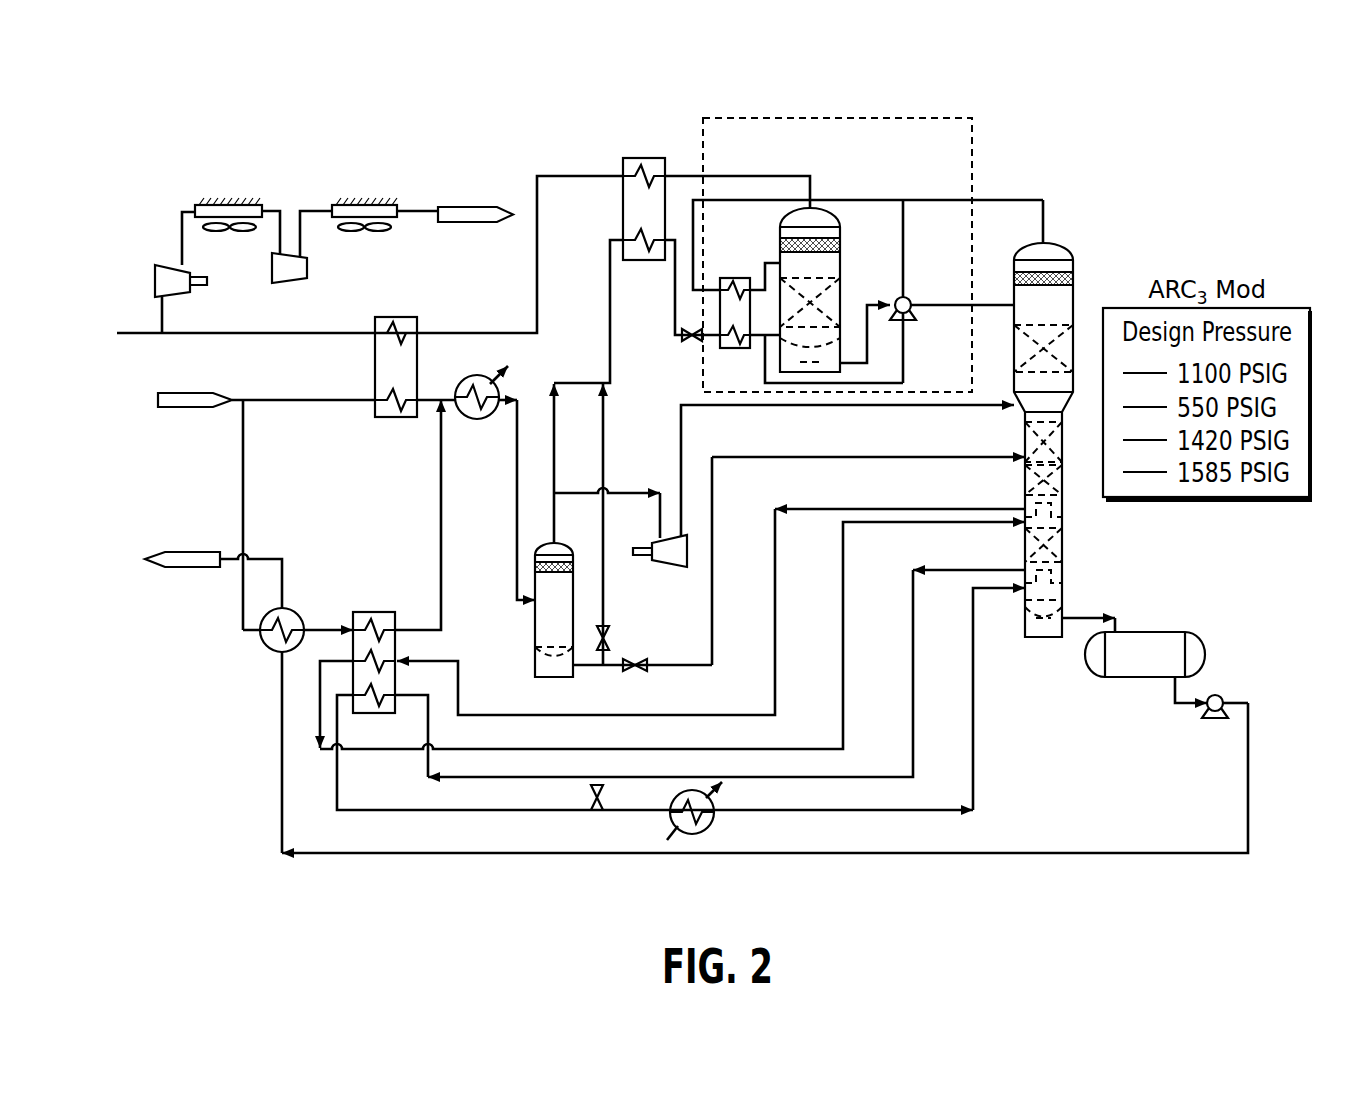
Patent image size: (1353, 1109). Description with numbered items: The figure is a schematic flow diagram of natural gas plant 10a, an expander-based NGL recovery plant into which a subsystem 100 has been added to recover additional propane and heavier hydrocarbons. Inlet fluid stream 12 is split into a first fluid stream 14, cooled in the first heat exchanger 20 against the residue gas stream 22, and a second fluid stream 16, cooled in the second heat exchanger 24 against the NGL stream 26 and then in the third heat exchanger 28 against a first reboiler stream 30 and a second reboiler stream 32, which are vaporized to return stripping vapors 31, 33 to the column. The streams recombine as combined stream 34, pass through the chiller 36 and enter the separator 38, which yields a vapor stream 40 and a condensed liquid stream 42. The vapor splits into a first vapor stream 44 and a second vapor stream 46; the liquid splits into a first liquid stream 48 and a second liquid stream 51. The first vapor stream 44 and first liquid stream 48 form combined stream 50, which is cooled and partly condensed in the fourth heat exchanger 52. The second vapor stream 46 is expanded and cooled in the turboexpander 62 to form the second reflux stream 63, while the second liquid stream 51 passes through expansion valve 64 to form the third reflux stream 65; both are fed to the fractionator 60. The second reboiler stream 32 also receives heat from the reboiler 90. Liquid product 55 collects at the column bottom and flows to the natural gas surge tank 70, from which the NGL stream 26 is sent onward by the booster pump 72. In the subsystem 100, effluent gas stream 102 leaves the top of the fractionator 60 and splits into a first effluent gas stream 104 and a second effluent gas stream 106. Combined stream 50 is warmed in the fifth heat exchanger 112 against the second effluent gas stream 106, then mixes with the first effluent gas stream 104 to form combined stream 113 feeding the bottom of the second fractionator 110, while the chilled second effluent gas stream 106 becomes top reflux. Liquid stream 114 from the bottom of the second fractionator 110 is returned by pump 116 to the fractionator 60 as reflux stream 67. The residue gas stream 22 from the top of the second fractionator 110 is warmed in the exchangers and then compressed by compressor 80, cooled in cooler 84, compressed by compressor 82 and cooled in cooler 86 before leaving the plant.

The natural gas plant 10a is at (1118, 105).
The subsystem 100 is at (893, 115).
The effluent gas stream 102 is at (1060, 222).
The first effluent gas stream 104 is at (905, 250).
The second effluent gas stream 106 is at (860, 199).
The second fractionator 110 is at (778, 246).
The fifth heat exchanger 112 is at (735, 350).
The combined stream 113 is at (766, 345).
The liquid stream 114 is at (868, 345).
The pump 116 is at (896, 299).
The inlet fluid stream 12 is at (172, 390).
The first fluid stream 14 is at (332, 398).
The second fluid stream 16 is at (241, 492).
The first heat exchanger 20 is at (400, 316).
The residue gas stream 22 is at (462, 226).
The second heat exchanger 24 is at (275, 652).
The NGL stream 26 is at (186, 551).
The third heat exchanger 28 is at (350, 620).
The first reboiler stream 30 is at (922, 508).
The stripping vapor 31 is at (925, 525).
The second reboiler stream 32 is at (495, 780).
The stripping vapor 33 is at (975, 727).
The combined stream 34 is at (441, 390).
The chiller 36 is at (448, 430).
The separator 38 is at (533, 630).
The vapor stream 40 is at (556, 535).
The condensed liquid stream 42 is at (580, 667).
The first vapor stream 44 is at (557, 436).
The second vapor stream 46 is at (596, 490).
The first liquid stream 48 is at (610, 462).
The combined stream 50 is at (608, 312).
The second liquid stream 51 is at (710, 640).
The fourth heat exchanger 52 is at (632, 157).
The liquid product 55 is at (1093, 617).
The fractionator 60 is at (1078, 265).
The turboexpander 62 is at (655, 537).
The second reflux stream 63 is at (687, 410).
The expansion valve 64 is at (643, 673).
The third reflux stream 65 is at (908, 456).
The reflux stream 67 is at (950, 306).
The natural gas surge tank 70 is at (1150, 631).
The booster pump 72 is at (1223, 695).
The compressor 80 is at (160, 270).
The compressor 82 is at (308, 268).
The cooler 84 is at (195, 206).
The cooler 86 is at (332, 206).
The reboiler 90 is at (690, 836).